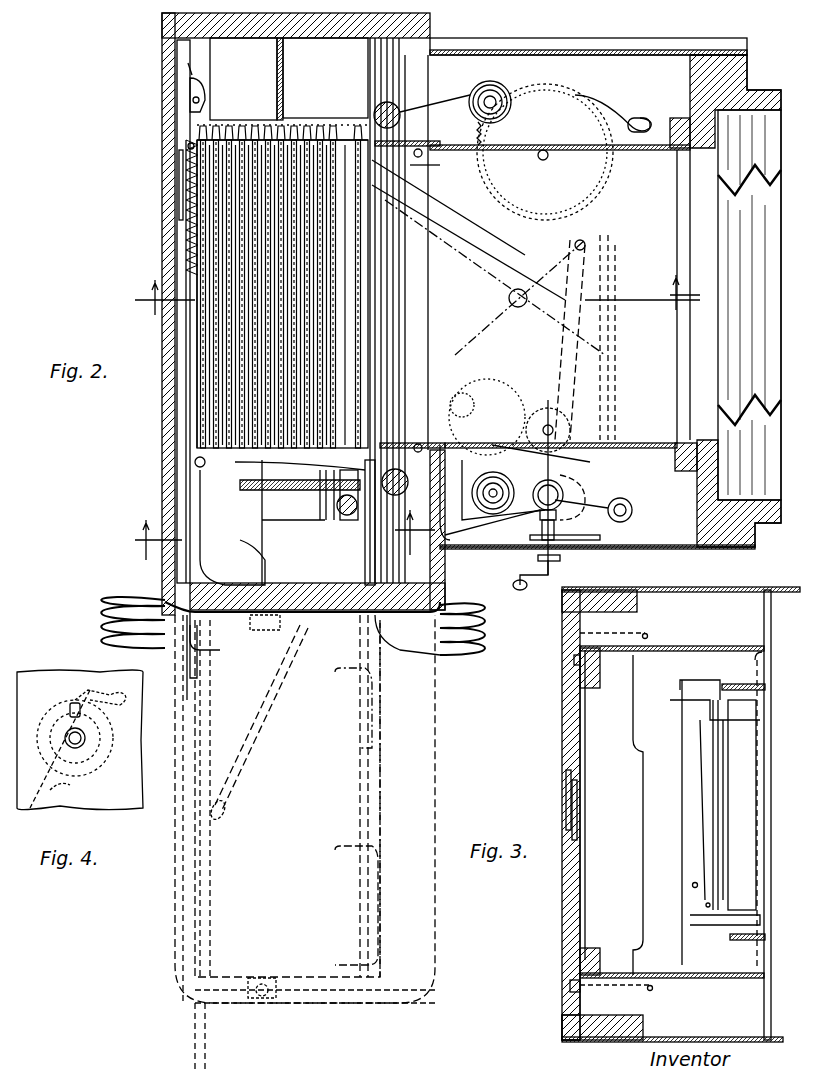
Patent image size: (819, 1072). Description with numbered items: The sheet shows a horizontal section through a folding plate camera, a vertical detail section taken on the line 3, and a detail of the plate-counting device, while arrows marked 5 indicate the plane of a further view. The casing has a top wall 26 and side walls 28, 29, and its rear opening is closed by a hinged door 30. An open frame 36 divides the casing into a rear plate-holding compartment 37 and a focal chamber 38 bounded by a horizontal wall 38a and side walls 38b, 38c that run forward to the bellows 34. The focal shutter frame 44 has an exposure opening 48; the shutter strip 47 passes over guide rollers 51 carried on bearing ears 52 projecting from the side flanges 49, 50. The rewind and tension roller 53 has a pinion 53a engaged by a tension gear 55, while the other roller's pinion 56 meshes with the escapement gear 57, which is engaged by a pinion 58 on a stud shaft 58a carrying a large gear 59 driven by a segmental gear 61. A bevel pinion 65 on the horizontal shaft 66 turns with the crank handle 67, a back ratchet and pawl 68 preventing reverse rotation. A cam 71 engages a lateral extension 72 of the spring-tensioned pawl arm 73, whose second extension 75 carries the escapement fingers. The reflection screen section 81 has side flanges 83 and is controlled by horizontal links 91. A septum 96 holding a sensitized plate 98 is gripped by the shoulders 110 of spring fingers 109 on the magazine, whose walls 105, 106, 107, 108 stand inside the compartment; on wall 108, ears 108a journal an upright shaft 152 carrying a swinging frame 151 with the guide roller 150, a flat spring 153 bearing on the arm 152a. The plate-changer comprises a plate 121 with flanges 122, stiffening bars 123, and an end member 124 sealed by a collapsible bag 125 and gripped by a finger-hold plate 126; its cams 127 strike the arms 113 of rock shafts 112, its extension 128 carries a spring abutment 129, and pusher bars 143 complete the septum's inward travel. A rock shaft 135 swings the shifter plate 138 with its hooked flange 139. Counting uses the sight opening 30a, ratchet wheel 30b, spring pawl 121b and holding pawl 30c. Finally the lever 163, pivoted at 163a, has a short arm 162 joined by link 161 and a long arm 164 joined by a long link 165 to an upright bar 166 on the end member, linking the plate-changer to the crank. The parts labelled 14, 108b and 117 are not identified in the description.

In FIG. 2, the rear plate-holding compartment 37 is at (178, 55).
In FIG. 3, the rear plate-holding compartment 37 is at (594, 884).
In FIG. 2, the extension 128 is at (190, 85).
In FIG. 2, the spring controlled abutment 129 is at (196, 110).
In FIG. 2, the upright rock shaft 135 is at (188, 146).
In FIG. 2, the ruby glass sight opening 30a is at (178, 178).
In FIG. 3, the ruby glass sight opening 30a is at (568, 790).
In FIG. 4, the ruby glass sight opening 30a is at (72, 710).
In FIG. 2, the shoulders or grips 110 is at (188, 232).
In FIG. 2, the sensitized glass plate 98 is at (192, 255).
In FIG. 2, the section line 5 is at (415, 295).
In FIG. 2, the septum or sensitized plate holder 96 is at (220, 340).
In FIG. 2, the shifter plate 138 is at (215, 383).
In FIG. 2, the hooked flange 139 is at (195, 462).
In FIG. 2, the rectangular plate 121 is at (178, 490).
In FIG. 3, the rectangular plate 121 is at (575, 743).
In FIG. 2, the rotative ratchet counter wheel 30b is at (175, 548).
In FIG. 3, the rotative ratchet counter wheel 30b is at (565, 800).
In FIG. 4, the rotative ratchet counter wheel 30b is at (45, 770).
In FIG. 2, the section line 3 is at (279, 535).
In FIG. 2, the collapsible bag 125 is at (112, 600).
In FIG. 2, the left hand side wall of magazine 107 is at (322, 126).
In FIG. 2, the side flange of shutter frame 49 is at (440, 125).
In FIG. 2, the side wall of casing 28 is at (500, 52).
In FIG. 2, the shutter guide rollers 51 is at (402, 108).
In FIG. 2, the bearing ears 52 is at (408, 443).
In FIG. 2, the shutter band or strip 47 is at (462, 95).
In FIG. 2, the horizontal links 91 is at (465, 110).
In FIG. 2, the rewind and spring tension roller 53 is at (500, 85).
In FIG. 2, the pinion 53a is at (564, 152).
In FIG. 2, the side flanges of screen section 83 is at (420, 170).
In FIG. 2, the tension gear 55 is at (502, 169).
In FIG. 2, the focal shutter frame 44 is at (430, 183).
In FIG. 2, the spring fingers or supports 109 is at (400, 200).
In FIG. 2, the long arm of lever 164 is at (462, 250).
In FIG. 2, the horizontally swinging lever 163 is at (485, 255).
In FIG. 2, the lever pivot 163a is at (545, 268).
In FIG. 2, the screen section 81 is at (385, 250).
In FIG. 2, the horizontal wall of focal chamber 38a is at (420, 330).
In FIG. 2, the short arm of lever 162 is at (582, 300).
In FIG. 2, the link 161 is at (610, 372).
In FIG. 2, the stud shaft 58a is at (600, 390).
In FIG. 2, the escapement gear 57 is at (500, 390).
In FIG. 2, the large gear 59 is at (594, 462).
In FIG. 2, the exposure opening 48 is at (461, 395).
In FIG. 2, the pinion 58 is at (595, 410).
In FIG. 2, the vertical side wall of focal chamber 38c is at (640, 443).
In FIG. 2, the focal chamber 38 is at (663, 407).
In FIG. 2, the bellows 34 is at (749, 305).
In FIG. 2, the vertical side wall of focal chamber 38b is at (636, 152).
In FIG. 2, the side flange of shutter frame 50 is at (405, 472).
In FIG. 2, the ears 108a is at (325, 466).
In FIG. 3, the ears 108a is at (712, 710).
In FIG. 2, the right hand side wall of magazine 108 is at (262, 505).
In FIG. 3, the right hand side wall of magazine 108 is at (632, 718).
In FIG. 2, the swinging frame 151 is at (322, 500).
In FIG. 3, the swinging frame 151 is at (715, 755).
In FIG. 2, the upright shaft 152 is at (335, 502).
In FIG. 3, the upright shaft 152 is at (722, 840).
In FIG. 2, the spring controlled guide roller 150 is at (352, 520).
In FIG. 3, the spring controlled guide roller 150 is at (740, 805).
In FIG. 2, the pusher bars 143 is at (342, 558).
In FIG. 3, the pusher bars 143 is at (732, 680).
In FIG. 2, the long link 165 is at (262, 540).
In FIG. 2, the open frame 36 is at (380, 555).
In FIG. 3, the open frame 36 is at (770, 810).
In FIG. 2, the pinion 56 is at (495, 540).
In FIG. 2, the spring tensioned pawl arm 73 is at (540, 520).
In FIG. 2, the bevel pinion 65 is at (526, 591).
In FIG. 2, the crank handle 67 is at (555, 570).
In FIG. 2, the back ratchet and pawl 68 is at (600, 538).
In FIG. 2, the lateral extension 72 is at (565, 508).
In FIG. 2, the cam 71 is at (565, 490).
In FIG. 2, the wheel 14 is at (633, 512).
In FIG. 2, the horizontal shaft 66 is at (600, 534).
In FIG. 2, the segmental gear 61 is at (580, 480).
In FIG. 2, the side wall of casing 29 is at (640, 549).
In FIG. 2, the cams 127 is at (627, 593).
In FIG. 3, the cams 127 is at (575, 1008).
In FIG. 2, the top wall of casing 26 is at (718, 580).
In FIG. 2, the second lateral extension 75 is at (438, 509).
In FIG. 2, the upright bar 166 is at (216, 809).
In FIG. 2, the finger-hold plate 126 is at (200, 675).
In FIG. 2, the end member 124 is at (335, 615).
In FIG. 2, the rearwardly extending arms 113 is at (392, 625).
In FIG. 3, the rearwardly extending arms 113 is at (635, 612).
In FIG. 2, the pin 117 is at (523, 113).
In FIG. 3, the top wall of magazine frame 105 is at (705, 650).
In FIG. 3, the bottom wall of magazine frame 106 is at (710, 978).
In FIG. 3, the rock shafts 112 is at (648, 635).
In FIG. 3, the lug 108b is at (708, 684).
In FIG. 3, the horizontal arm 152a is at (685, 690).
In FIG. 3, the flat spring 153 is at (680, 785).
In FIG. 3, the bars 123 is at (630, 690).
In FIG. 3, the top and bottom flanges 122 is at (570, 665).
In FIG. 3, the hinged door 30 is at (565, 928).
In FIG. 4, the hinged door 30 is at (130, 800).
In FIG. 4, the second pawl 30c is at (86, 789).
In FIG. 4, the spring pawl 121b is at (90, 690).